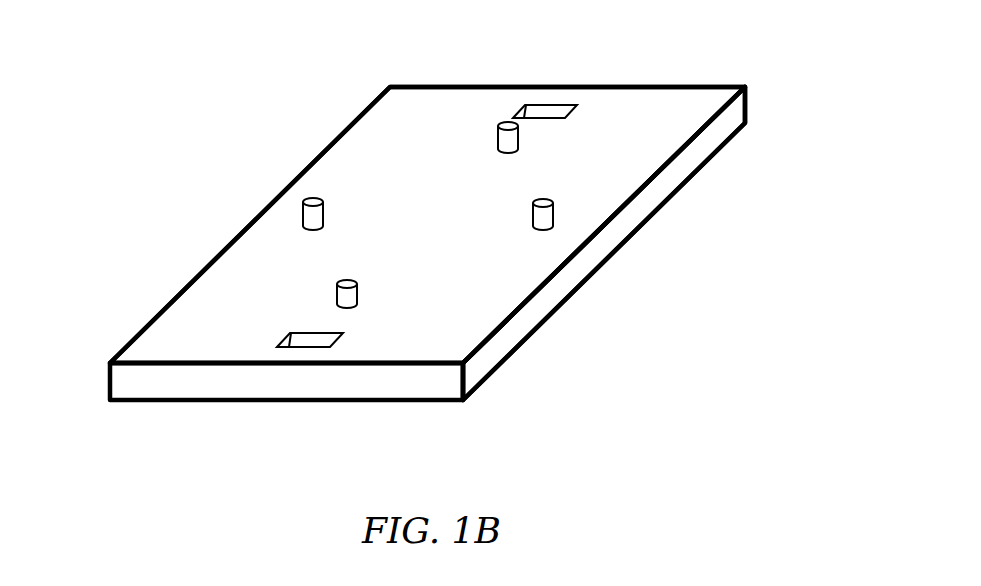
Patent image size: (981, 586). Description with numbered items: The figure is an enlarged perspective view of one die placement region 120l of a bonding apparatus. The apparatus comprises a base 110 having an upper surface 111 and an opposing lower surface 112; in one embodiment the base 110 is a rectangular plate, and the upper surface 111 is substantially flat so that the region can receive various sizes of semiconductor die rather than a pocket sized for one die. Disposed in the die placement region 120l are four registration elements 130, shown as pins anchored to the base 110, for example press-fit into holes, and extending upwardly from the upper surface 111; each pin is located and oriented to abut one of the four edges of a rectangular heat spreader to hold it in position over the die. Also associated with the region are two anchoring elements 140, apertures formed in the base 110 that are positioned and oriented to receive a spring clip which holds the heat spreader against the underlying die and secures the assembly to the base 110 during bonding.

The base 110 is at (750, 100).
The upper surface 111 is at (392, 130).
The lower surface 112 is at (510, 355).
The die placement region 120l is at (451, 217).
The registration elements 130 is at (337, 295).
The anchoring elements 140 is at (548, 110).